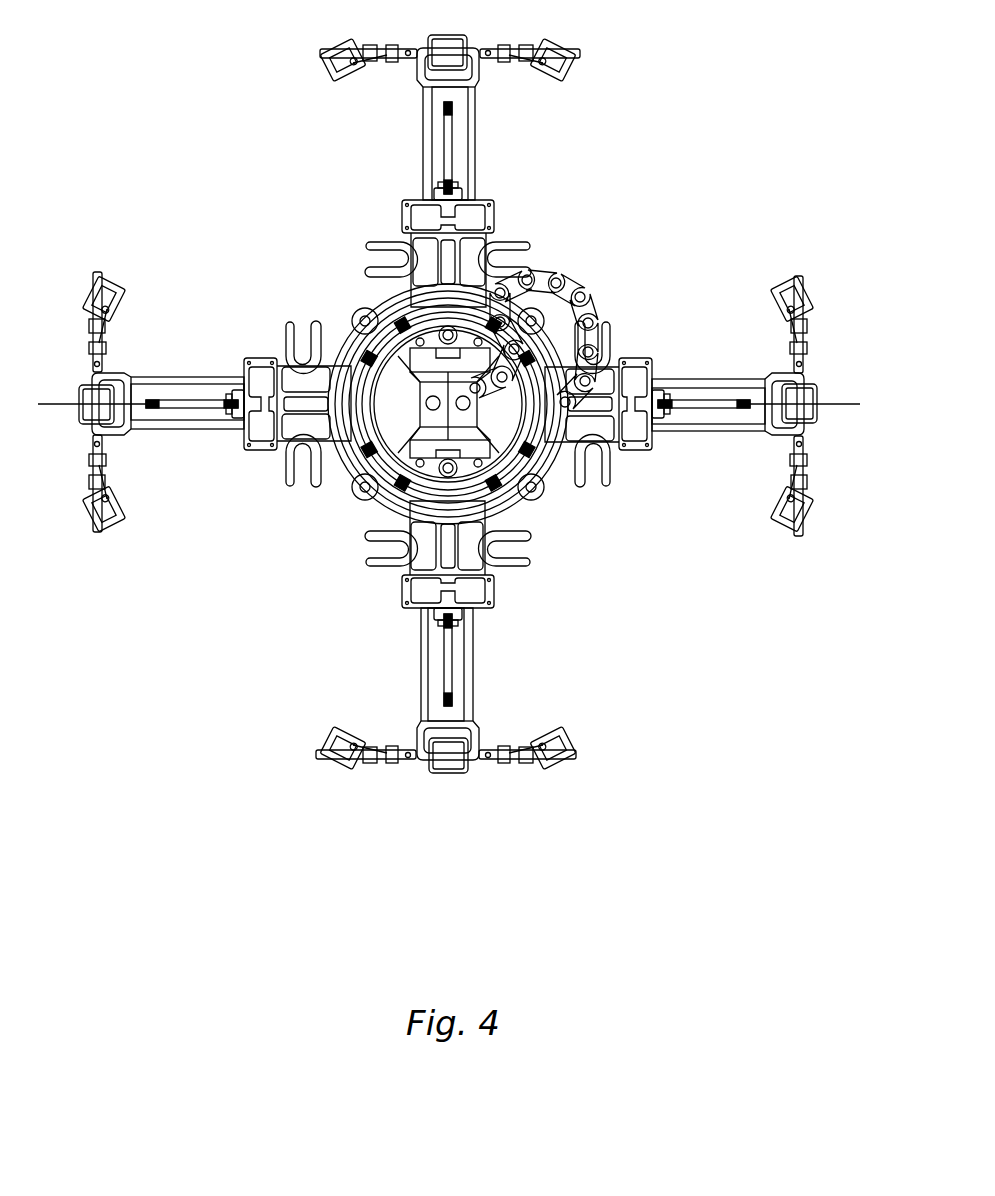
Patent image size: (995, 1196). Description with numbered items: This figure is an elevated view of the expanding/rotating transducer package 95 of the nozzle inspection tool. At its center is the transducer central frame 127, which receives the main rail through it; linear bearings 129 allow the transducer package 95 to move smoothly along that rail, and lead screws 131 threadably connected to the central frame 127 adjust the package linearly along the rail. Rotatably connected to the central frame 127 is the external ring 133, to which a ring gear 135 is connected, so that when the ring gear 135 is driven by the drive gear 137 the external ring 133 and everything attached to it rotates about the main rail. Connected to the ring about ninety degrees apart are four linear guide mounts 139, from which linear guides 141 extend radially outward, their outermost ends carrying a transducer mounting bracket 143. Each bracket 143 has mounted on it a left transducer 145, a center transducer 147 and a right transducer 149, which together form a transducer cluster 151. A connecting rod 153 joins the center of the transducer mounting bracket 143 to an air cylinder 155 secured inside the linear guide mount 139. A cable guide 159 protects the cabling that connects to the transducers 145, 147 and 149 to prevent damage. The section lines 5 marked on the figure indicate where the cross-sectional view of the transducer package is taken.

The expanding/rotating transducer package 95 is at (752, 134).
The transducer central frame 127 is at (515, 455).
The linear bearings 129 is at (380, 322).
The lead screws 131 is at (353, 332).
The external ring 133 is at (350, 482).
The ring gear 135 is at (520, 492).
The drive gear 137 is at (486, 233).
The linear guide mounts 139 is at (496, 212).
The linear guides 141 is at (672, 377).
The transducer mounting bracket 143 is at (779, 442).
The left transducer 145 is at (806, 292).
The center transducer 147 is at (808, 420).
The right transducer 149 is at (807, 520).
The transducer cluster 151 is at (776, 556).
The connecting rod 153 is at (720, 400).
The air cylinder 155 is at (668, 425).
The cable guide 159 is at (560, 272).
The section lines 5- 5 is at (62, 433).